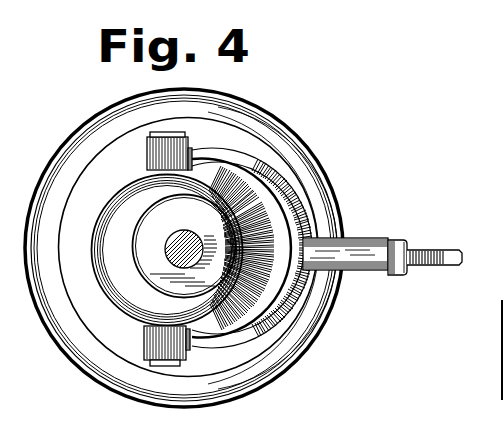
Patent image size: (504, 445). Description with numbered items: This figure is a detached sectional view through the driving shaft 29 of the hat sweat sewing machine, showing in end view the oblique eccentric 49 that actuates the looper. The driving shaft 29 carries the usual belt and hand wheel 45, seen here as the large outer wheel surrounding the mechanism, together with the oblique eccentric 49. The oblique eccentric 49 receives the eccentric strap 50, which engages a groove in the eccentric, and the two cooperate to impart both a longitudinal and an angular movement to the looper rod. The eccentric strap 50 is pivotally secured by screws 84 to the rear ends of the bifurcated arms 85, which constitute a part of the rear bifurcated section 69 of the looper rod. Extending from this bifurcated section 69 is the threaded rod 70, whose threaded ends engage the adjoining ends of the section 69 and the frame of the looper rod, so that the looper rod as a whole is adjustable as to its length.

The belt and hand wheel 45 is at (295, 148).
The bifurcated arms 85 is at (272, 187).
The oblique eccentric 49 is at (183, 248).
The eccentric strap 50 is at (103, 296).
The driving shaft 29 is at (180, 240).
The screws 84 is at (165, 137).
The bifurcated section 69 is at (380, 269).
The threaded rod 70 is at (446, 260).